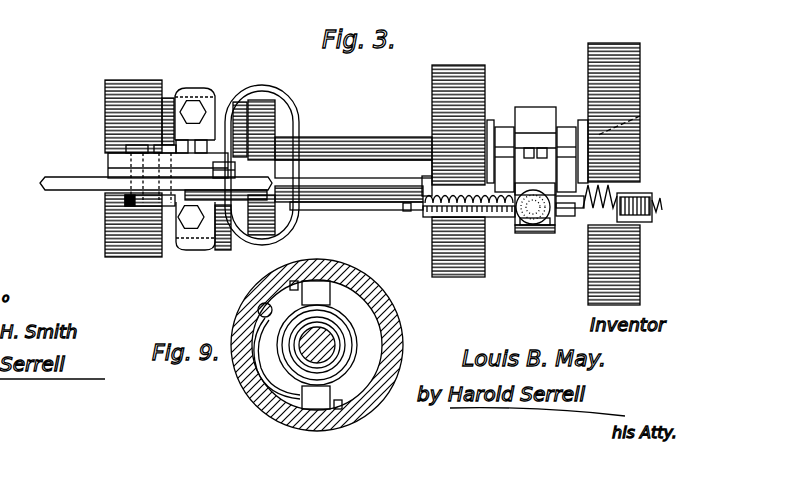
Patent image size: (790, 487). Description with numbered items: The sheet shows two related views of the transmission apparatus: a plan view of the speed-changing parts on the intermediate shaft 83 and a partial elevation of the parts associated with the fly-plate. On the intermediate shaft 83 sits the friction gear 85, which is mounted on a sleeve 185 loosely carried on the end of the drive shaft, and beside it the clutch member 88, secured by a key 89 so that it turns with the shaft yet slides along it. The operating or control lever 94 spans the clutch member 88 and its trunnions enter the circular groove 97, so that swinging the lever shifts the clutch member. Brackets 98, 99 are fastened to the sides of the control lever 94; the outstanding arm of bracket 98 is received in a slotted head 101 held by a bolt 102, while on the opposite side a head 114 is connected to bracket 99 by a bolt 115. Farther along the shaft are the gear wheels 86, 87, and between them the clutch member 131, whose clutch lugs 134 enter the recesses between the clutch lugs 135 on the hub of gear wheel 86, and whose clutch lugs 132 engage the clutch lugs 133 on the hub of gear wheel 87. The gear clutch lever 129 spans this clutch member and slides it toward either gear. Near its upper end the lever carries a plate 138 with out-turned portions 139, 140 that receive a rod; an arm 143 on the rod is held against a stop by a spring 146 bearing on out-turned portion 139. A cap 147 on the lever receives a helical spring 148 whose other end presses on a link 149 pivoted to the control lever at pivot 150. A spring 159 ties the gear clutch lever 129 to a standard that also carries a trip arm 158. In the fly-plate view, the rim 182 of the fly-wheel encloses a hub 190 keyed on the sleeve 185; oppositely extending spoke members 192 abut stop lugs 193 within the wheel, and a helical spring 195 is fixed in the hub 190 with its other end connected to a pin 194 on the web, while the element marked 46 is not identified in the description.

In FIG. 3, the friction gear 85 is at (139, 80).
In FIG. 3, the operating or control lever 94 is at (268, 91).
In FIG. 3, the head 101 is at (176, 86).
In FIG. 3, the bolt 102 is at (193, 106).
In FIG. 3, the bracket 98 is at (232, 101).
In FIG. 3, the clutch member 88 is at (268, 128).
In FIG. 3, the circular groove 97 is at (238, 162).
In FIG. 3, the intermediate shaft 83 is at (380, 140).
In FIG. 3, the key 89 is at (349, 170).
In FIG. 3, the helical spring 148 is at (50, 184).
In FIG. 3, the pivotal connection 150 is at (160, 217).
In FIG. 3, the bolt 115 is at (182, 238).
In FIG. 3, the head 114 is at (195, 248).
In FIG. 3, the bracket 99 is at (187, 248).
In FIG. 3, the link 149 is at (373, 205).
In FIG. 3, the out-turned portion 139 is at (418, 216).
In FIG. 3, the spring 146 is at (500, 218).
In FIG. 3, the plate 138 is at (432, 184).
In FIG. 3, the cap 147 is at (410, 207).
In FIG. 3, the gear wheel 86 is at (458, 65).
In FIG. 3, the clutch lugs 135 is at (488, 120).
In FIG. 3, the clutch lugs 134 is at (500, 126).
In FIG. 3, the gear clutch lever 129 is at (538, 107).
In FIG. 3, the clutch member 131 is at (563, 126).
In FIG. 3, the clutch lugs 132 is at (573, 125).
In FIG. 3, the out-turned portion 140 is at (554, 178).
In FIG. 3, the arm 143 is at (531, 226).
In FIG. 3, the gear wheel 87 is at (611, 43).
In FIG. 3, the clutch lugs 133 is at (640, 116).
In FIG. 3, the trip arm 158 is at (652, 222).
In FIG. 3, the spring 159 is at (652, 195).
In FIG. 9, the rim 182 is at (388, 322).
In FIG. 9, the spoke members 192 is at (318, 297).
In FIG. 9, the helical spring 195 is at (343, 352).
In FIG. 9, the hub 190 is at (329, 367).
In FIG. 9, the sleeve 185 is at (338, 356).
In FIG. 9, the spring wire 46 is at (284, 362).
In FIG. 9, the pin 194 is at (270, 307).
In FIG. 9, the stop lugs 193 is at (293, 282).